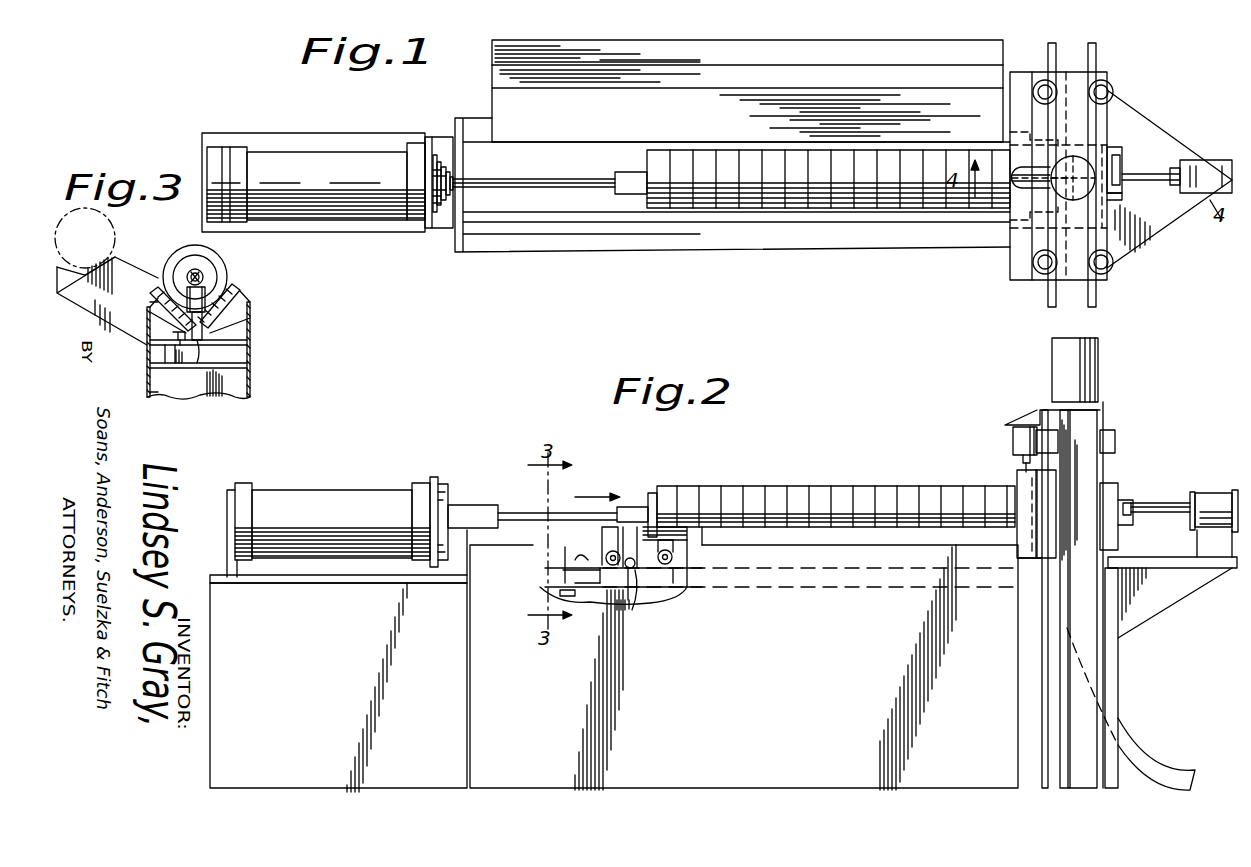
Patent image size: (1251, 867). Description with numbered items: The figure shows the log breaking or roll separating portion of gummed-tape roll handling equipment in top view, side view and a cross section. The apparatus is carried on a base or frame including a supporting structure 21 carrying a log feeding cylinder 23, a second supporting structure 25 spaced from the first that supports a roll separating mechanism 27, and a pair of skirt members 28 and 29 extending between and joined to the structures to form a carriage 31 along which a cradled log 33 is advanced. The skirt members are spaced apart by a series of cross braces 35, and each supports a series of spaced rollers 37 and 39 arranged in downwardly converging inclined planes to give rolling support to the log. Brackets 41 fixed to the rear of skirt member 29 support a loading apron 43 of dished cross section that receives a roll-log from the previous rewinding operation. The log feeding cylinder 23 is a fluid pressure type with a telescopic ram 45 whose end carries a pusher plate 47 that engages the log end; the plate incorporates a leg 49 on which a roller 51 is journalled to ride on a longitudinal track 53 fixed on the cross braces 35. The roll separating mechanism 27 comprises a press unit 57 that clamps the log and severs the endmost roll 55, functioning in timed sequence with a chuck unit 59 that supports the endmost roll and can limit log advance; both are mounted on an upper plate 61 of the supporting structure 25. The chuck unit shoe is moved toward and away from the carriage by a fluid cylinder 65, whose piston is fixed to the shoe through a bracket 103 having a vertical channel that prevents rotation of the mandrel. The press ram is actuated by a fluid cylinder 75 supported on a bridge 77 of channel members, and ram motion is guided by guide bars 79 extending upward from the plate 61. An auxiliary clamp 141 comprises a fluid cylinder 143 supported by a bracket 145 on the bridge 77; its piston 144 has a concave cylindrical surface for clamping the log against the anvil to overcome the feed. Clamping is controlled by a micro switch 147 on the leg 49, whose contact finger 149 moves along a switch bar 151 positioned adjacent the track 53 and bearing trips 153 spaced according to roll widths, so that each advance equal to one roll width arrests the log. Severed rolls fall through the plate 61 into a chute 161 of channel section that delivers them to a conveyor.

In FIG. 1, the supporting structure 21 is at (303, 140).
In FIG. 2, the supporting structure 21 is at (334, 608).
In FIG. 1, the log feeding cylinder 23 is at (345, 158).
In FIG. 2, the log feeding cylinder 23 is at (315, 490).
In FIG. 1, the second supporting structure 25 is at (1094, 66).
In FIG. 2, the second supporting structure 25 is at (1112, 672).
In FIG. 1, the roll separating mechanism 27 is at (1115, 123).
In FIG. 2, the roll separating mechanism 27 is at (1118, 475).
In FIG. 2, the skirt member 28 is at (776, 692).
In FIG. 3, the skirt member 28 is at (251, 386).
In FIG. 3, the skirt member 29 is at (153, 392).
In FIG. 1, the carriage 31 is at (570, 205).
In FIG. 2, the carriage 31 is at (690, 570).
In FIG. 3, the carriage 31 is at (230, 336).
In FIG. 1, the log 33 is at (725, 200).
In FIG. 2, the log 33 is at (800, 490).
In FIG. 3, the log 33 is at (100, 231).
In FIG. 2, the cross braces 35 is at (592, 600).
In FIG. 3, the cross braces 35 is at (226, 365).
In FIG. 3, the rollers 37 is at (242, 296).
In FIG. 2, the rollers 39 is at (606, 545).
In FIG. 3, the rollers 39 is at (152, 298).
In FIG. 3, the brackets 41 is at (95, 305).
In FIG. 1, the loading apron 43 is at (790, 55).
In FIG. 3, the loading apron 43 is at (124, 266).
In FIG. 1, the ram 45 is at (448, 176).
In FIG. 2, the ram 45 is at (452, 500).
In FIG. 3, the ram 45 is at (203, 272).
In FIG. 1, the pusher plate 47 is at (637, 197).
In FIG. 2, the pusher plate 47 is at (652, 493).
In FIG. 3, the pusher plate 47 is at (194, 268).
In FIG. 2, the leg 49 is at (645, 565).
In FIG. 3, the leg 49 is at (236, 292).
In FIG. 2, the roller 51 is at (632, 590).
In FIG. 3, the roller 51 is at (204, 340).
In FIG. 2, the track 53 is at (633, 612).
In FIG. 3, the track 53 is at (198, 356).
In FIG. 2, the endmost roll 55 is at (1124, 495).
In FIG. 1, the press unit 57 is at (1118, 168).
In FIG. 2, the press unit 57 is at (1115, 440).
In FIG. 1, the chuck unit 59 is at (1124, 196).
In FIG. 2, the chuck unit 59 is at (1130, 490).
In FIG. 1, the upper plate 61 is at (1200, 198).
In FIG. 2, the upper plate 61 is at (1165, 562).
In FIG. 2, the fluid cylinder 65 is at (1212, 500).
In FIG. 1, the fluid cylinder 75 is at (1070, 160).
In FIG. 2, the fluid cylinder 75 is at (1090, 362).
In FIG. 1, the bridge 77 is at (1100, 233).
In FIG. 2, the bridge 77 is at (1100, 418).
In FIG. 1, the guide bars 79 is at (1112, 84).
In FIG. 1, the bracket 103 is at (1151, 169).
In FIG. 2, the bracket 103 is at (1159, 523).
In FIG. 2, the auxiliary clamp 141 is at (1018, 457).
In FIG. 2, the fluid cylinder 143 is at (1013, 440).
In FIG. 2, the piston 144 is at (1020, 466).
In FIG. 1, the bracket 145 is at (1040, 190).
In FIG. 2, the bracket 145 is at (1032, 418).
In FIG. 3, the micro switch 147 is at (173, 338).
In FIG. 3, the contact finger 149 is at (178, 346).
In FIG. 2, the switch bar 151 is at (560, 592).
In FIG. 3, the switch bar 151 is at (178, 352).
In FIG. 2, the trips 153 is at (579, 565).
In FIG. 2, the chute 161 is at (1140, 738).